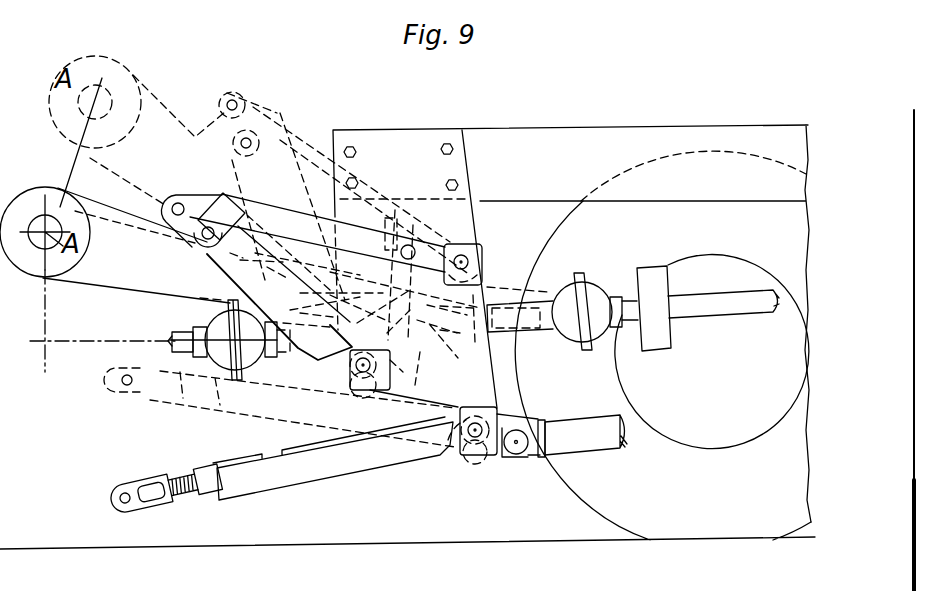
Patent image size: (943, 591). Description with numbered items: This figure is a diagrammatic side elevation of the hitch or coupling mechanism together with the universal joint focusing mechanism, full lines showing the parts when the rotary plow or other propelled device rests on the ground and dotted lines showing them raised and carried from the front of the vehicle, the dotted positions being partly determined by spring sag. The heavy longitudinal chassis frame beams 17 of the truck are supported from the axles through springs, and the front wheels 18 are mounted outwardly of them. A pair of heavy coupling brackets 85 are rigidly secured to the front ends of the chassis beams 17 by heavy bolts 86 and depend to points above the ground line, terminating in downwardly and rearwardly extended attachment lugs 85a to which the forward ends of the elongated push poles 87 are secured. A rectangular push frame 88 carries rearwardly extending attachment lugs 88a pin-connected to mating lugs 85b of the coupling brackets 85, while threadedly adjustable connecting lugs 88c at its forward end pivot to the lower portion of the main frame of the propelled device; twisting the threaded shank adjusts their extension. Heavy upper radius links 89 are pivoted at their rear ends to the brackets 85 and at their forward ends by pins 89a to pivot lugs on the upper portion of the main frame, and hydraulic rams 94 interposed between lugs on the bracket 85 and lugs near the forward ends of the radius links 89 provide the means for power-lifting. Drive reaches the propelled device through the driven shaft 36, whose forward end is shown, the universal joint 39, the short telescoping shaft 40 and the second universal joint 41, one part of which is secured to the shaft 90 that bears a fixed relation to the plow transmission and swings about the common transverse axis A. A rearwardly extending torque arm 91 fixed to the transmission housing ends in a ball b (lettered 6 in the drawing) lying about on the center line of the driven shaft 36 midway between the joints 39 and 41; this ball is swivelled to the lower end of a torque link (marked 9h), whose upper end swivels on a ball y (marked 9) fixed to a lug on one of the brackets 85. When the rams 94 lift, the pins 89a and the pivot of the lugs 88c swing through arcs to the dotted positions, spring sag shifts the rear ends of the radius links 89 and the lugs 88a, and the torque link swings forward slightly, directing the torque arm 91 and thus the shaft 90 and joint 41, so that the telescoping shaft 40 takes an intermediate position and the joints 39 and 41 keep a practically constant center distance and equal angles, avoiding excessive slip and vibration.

The chassis frame beams 17 is at (553, 138).
The front wheels 18 is at (730, 517).
The driven shaft 36 is at (727, 308).
The universal joint 39 is at (588, 290).
The telescoping drive shaft 40 is at (414, 374).
The universal joint 41 is at (212, 318).
The coupling brackets 85 is at (467, 233).
The attachment lugs 85a is at (508, 420).
The mating lugs 85b is at (491, 447).
The bolts 86 is at (450, 182).
The push poles 87 is at (592, 445).
The push frame 88 is at (311, 461).
The attachment lugs 88a is at (462, 450).
The connecting lugs 88c is at (133, 393).
The upper radius links 89 is at (343, 230).
The pins 89a is at (178, 202).
The shaft 90 is at (172, 345).
The torque arm 91 is at (125, 222).
The hydraulic rams 94 is at (279, 307).
The link 9 is at (423, 223).
The link 9h is at (451, 345).
The part 6 is at (404, 373).